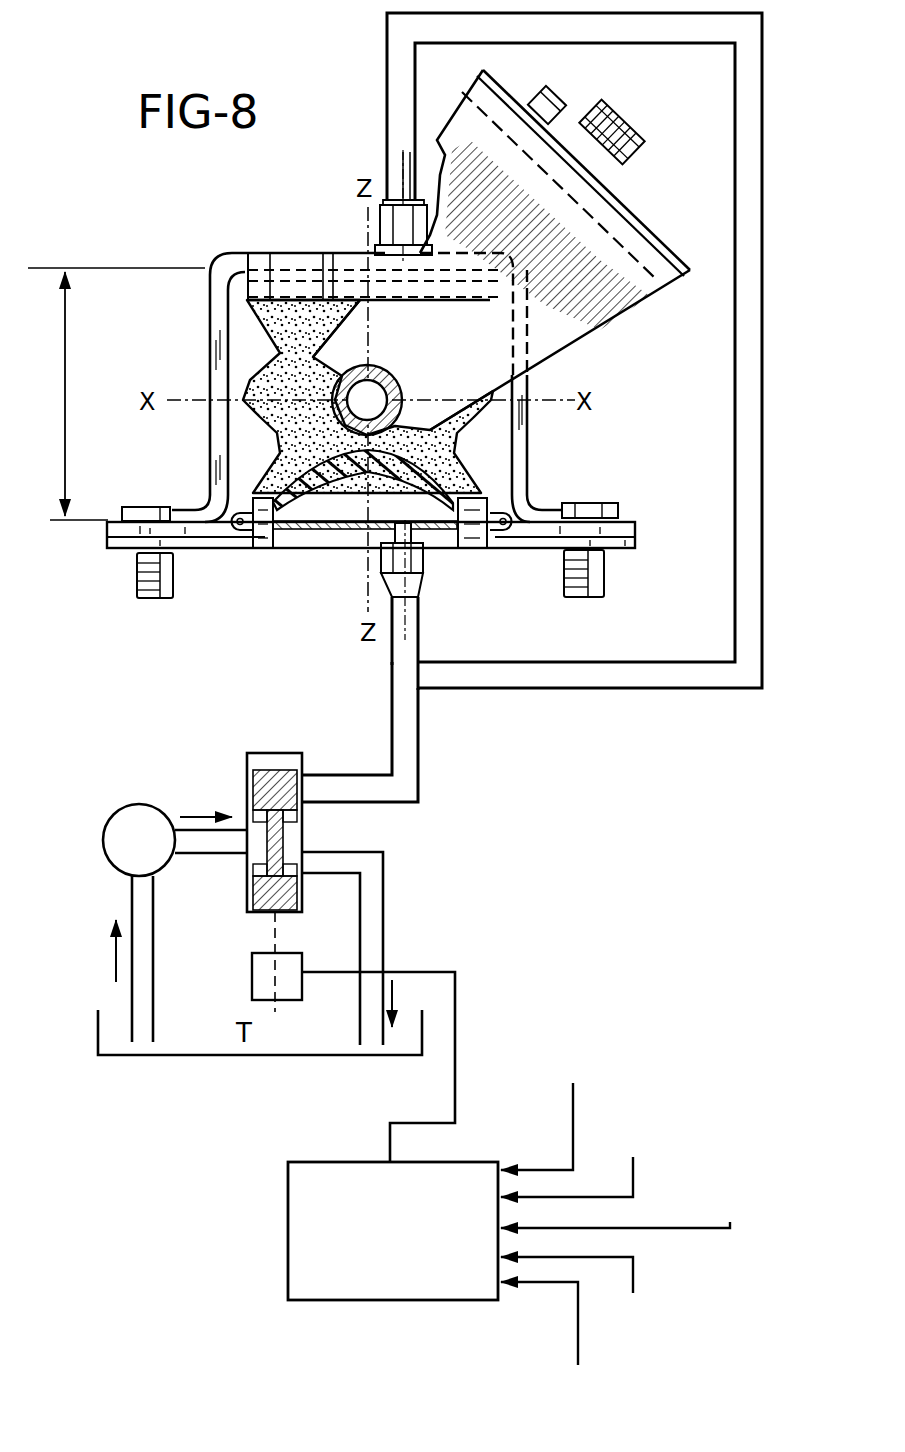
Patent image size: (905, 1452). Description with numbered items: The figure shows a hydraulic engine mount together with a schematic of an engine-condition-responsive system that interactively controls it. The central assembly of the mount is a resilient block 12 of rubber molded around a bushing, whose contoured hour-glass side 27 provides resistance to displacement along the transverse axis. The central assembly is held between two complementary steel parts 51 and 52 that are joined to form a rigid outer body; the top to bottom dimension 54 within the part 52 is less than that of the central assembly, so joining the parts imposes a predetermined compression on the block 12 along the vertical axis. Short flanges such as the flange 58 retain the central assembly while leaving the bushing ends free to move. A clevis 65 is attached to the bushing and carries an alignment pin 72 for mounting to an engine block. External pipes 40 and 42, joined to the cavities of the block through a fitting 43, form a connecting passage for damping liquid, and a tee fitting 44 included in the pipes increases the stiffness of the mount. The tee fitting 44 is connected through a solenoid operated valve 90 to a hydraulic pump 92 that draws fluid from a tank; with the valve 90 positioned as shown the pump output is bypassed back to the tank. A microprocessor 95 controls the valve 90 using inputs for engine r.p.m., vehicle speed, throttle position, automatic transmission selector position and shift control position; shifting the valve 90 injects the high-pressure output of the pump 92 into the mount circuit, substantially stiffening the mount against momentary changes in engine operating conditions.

The resilient block 12 is at (470, 462).
The side of the block 27 is at (370, 405).
The external pipe 40 is at (387, 105).
The external pipe 42 is at (420, 622).
The fitting 43 is at (428, 545).
The tee fitting 44 is at (405, 680).
The outer body part 51 is at (228, 550).
The outer body part 52 is at (212, 332).
The top to bottom dimension 54 is at (116, 394).
The flange 58 is at (328, 255).
The clevis 65 is at (508, 245).
The alignment pin 72 is at (548, 100).
The solenoid operated valve 90 is at (247, 780).
The hydraulic pump 92 is at (150, 805).
The microprocessor 95 is at (286, 1240).